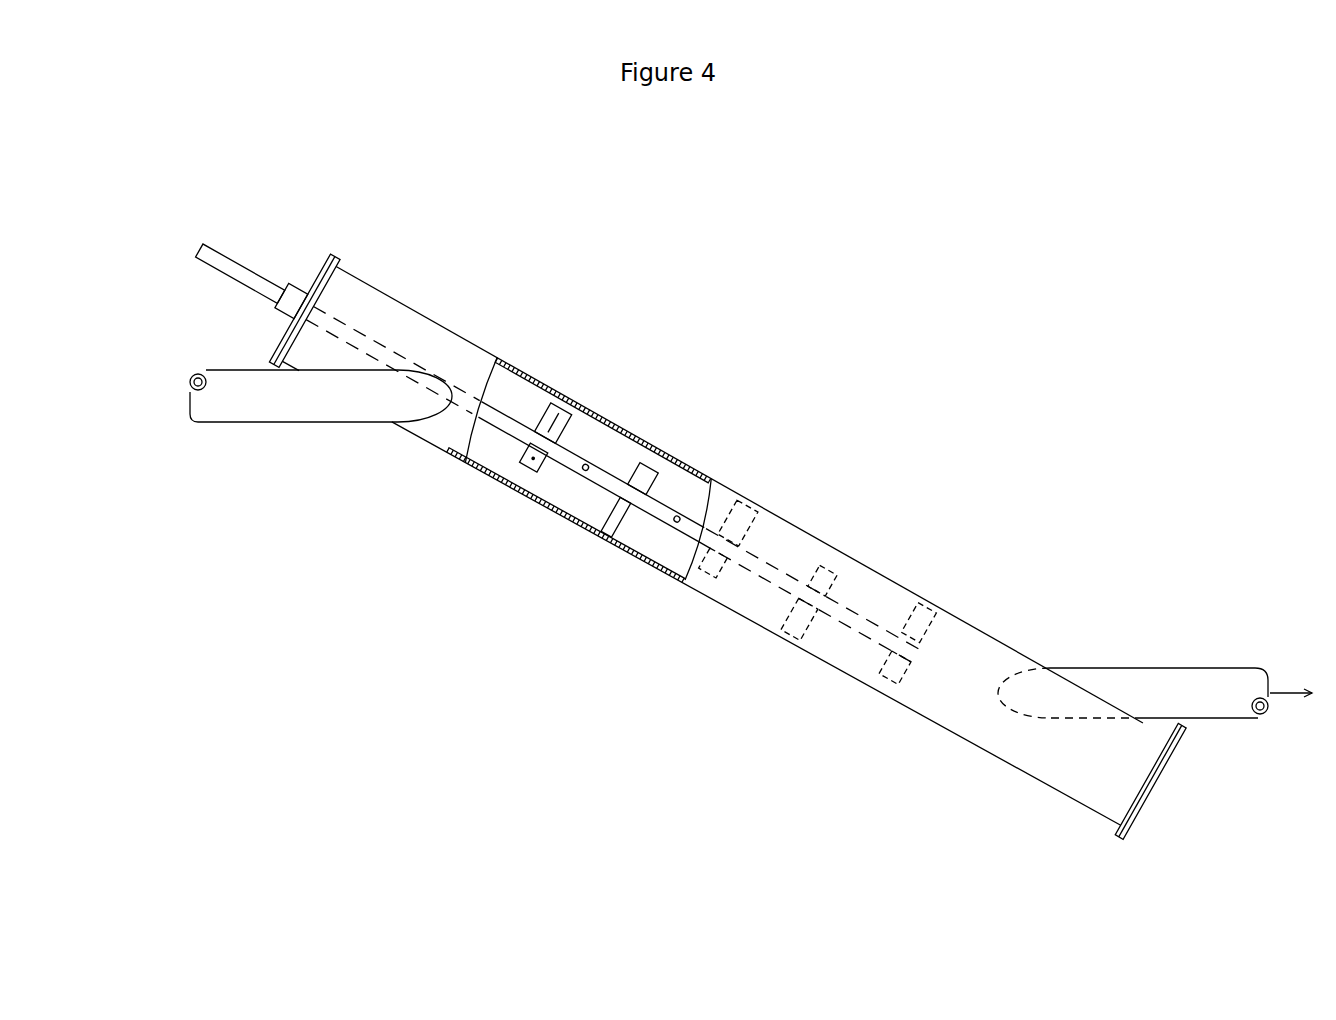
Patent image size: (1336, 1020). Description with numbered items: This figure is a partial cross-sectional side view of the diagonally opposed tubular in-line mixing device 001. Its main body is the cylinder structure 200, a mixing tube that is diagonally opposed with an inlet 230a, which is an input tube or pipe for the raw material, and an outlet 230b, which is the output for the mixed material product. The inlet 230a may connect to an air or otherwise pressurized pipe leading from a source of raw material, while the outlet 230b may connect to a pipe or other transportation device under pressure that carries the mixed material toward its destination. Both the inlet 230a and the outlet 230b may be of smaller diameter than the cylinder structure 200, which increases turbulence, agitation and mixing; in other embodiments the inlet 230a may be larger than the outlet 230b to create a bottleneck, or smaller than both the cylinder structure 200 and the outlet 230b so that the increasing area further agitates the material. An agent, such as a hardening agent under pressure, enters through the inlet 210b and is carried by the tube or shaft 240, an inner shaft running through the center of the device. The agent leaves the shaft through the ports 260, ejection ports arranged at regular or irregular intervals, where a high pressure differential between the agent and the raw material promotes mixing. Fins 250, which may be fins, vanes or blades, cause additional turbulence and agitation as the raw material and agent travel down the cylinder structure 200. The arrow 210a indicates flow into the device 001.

The device 001 is at (753, 380).
The cylinder structure 200 is at (1002, 630).
The first inlet flow 210a is at (183, 400).
The inlet 210b is at (195, 243).
The inlet 230a is at (292, 398).
The outlet 230b is at (1158, 667).
The tube or shaft 240 is at (500, 418).
The fins 250 is at (563, 395).
The ports 260 is at (587, 463).